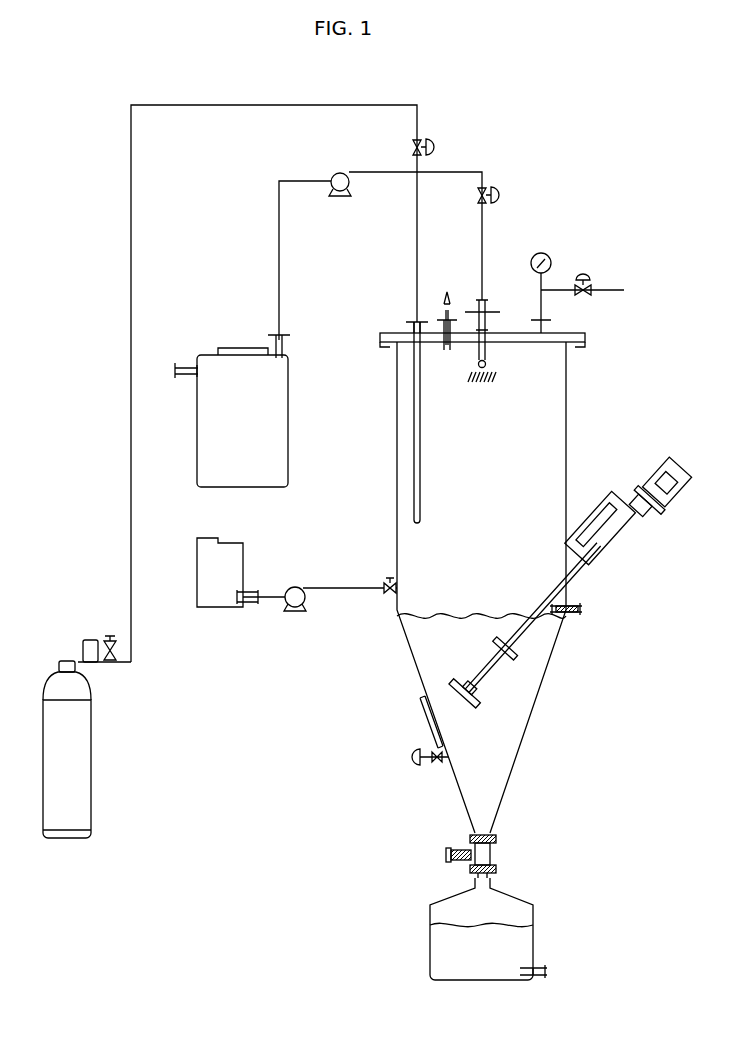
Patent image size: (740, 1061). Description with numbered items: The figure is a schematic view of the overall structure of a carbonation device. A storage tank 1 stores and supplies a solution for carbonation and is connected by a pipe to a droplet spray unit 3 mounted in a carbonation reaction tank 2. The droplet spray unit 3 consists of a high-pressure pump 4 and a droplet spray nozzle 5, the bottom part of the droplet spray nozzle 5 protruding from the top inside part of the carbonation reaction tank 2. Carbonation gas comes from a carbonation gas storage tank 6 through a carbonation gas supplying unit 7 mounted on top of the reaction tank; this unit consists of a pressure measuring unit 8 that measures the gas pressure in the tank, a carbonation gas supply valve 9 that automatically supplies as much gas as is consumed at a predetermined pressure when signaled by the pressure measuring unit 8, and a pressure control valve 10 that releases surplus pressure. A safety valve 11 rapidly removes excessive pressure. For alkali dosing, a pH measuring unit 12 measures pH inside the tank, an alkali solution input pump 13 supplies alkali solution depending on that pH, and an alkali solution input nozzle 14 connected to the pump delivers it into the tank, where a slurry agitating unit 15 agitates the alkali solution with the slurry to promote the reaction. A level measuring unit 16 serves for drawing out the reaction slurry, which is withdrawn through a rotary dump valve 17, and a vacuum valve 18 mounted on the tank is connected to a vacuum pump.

The storage tank 1 is at (289, 399).
The carbonation reaction tank 2 is at (548, 679).
The droplet spray unit 3 is at (498, 196).
The high-pressure pump 4 is at (340, 196).
The droplet spray nozzle 5 is at (498, 368).
The carbonation gas storage tank 6 is at (52, 686).
The carbonation gas supplying unit 7 is at (128, 470).
The pressure measuring unit 8 is at (548, 255).
The carbonation gas supply valve 9 is at (435, 148).
The pressure control valve 10 is at (104, 640).
The safety valve 11 is at (447, 290).
The pH measuring unit 12 is at (404, 757).
The alkali solution input pump 13 is at (288, 612).
The alkali solution input nozzle 14 is at (388, 580).
The slurry agitating unit 15 is at (633, 494).
The level measuring unit 16 is at (586, 610).
The rotary dump valve 17 is at (447, 855).
The vacuum valve 18 is at (590, 273).